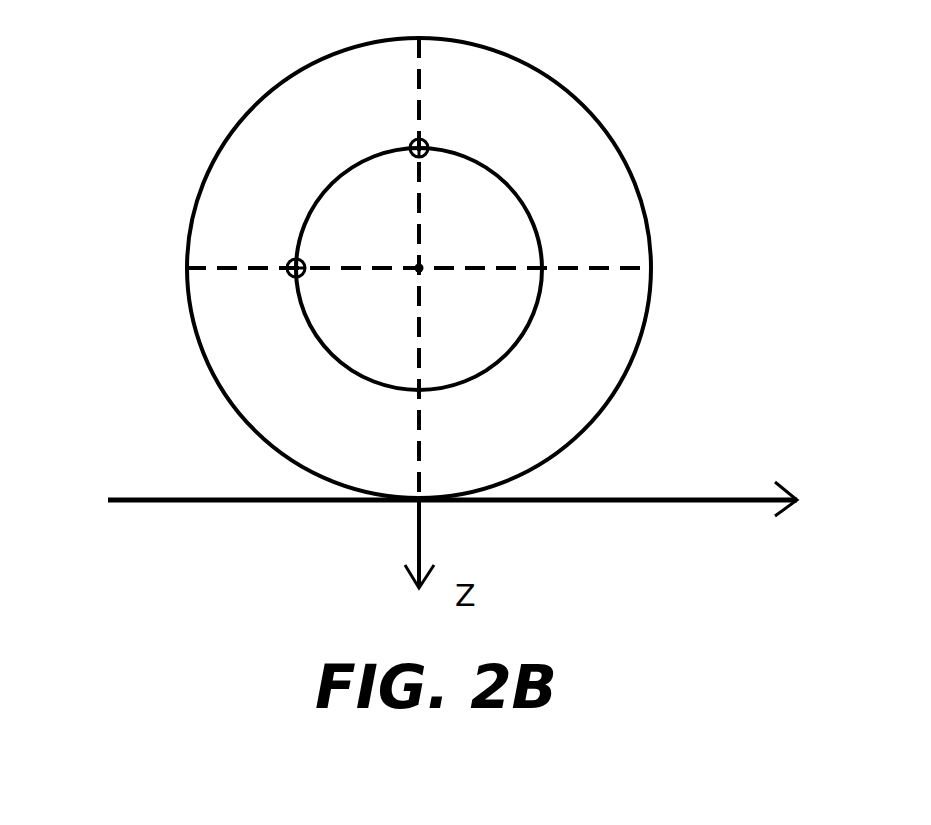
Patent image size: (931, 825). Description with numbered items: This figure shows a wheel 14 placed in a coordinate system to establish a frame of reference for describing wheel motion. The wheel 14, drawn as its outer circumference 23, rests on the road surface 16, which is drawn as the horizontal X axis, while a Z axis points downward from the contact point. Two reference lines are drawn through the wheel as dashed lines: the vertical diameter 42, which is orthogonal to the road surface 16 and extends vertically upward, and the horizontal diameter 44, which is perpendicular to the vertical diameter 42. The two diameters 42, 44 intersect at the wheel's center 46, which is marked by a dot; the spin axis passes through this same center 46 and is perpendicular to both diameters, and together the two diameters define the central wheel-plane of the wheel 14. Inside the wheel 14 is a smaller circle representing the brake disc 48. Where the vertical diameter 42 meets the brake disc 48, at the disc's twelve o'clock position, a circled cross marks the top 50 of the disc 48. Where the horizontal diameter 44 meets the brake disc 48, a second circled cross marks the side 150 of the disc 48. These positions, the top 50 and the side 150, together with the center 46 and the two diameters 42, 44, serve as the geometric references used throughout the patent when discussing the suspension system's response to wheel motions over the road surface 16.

The wheel 14 is at (118, 429).
The road surface 16 is at (633, 500).
The tire outer circumference 23 is at (185, 322).
The vertical diameter 42 is at (423, 65).
The horizontal diameter 44 is at (602, 270).
The wheel's center 46 is at (420, 270).
The brake disc 48 is at (518, 190).
The top of the disc 50 is at (418, 140).
The side of the disc 150 is at (294, 262).